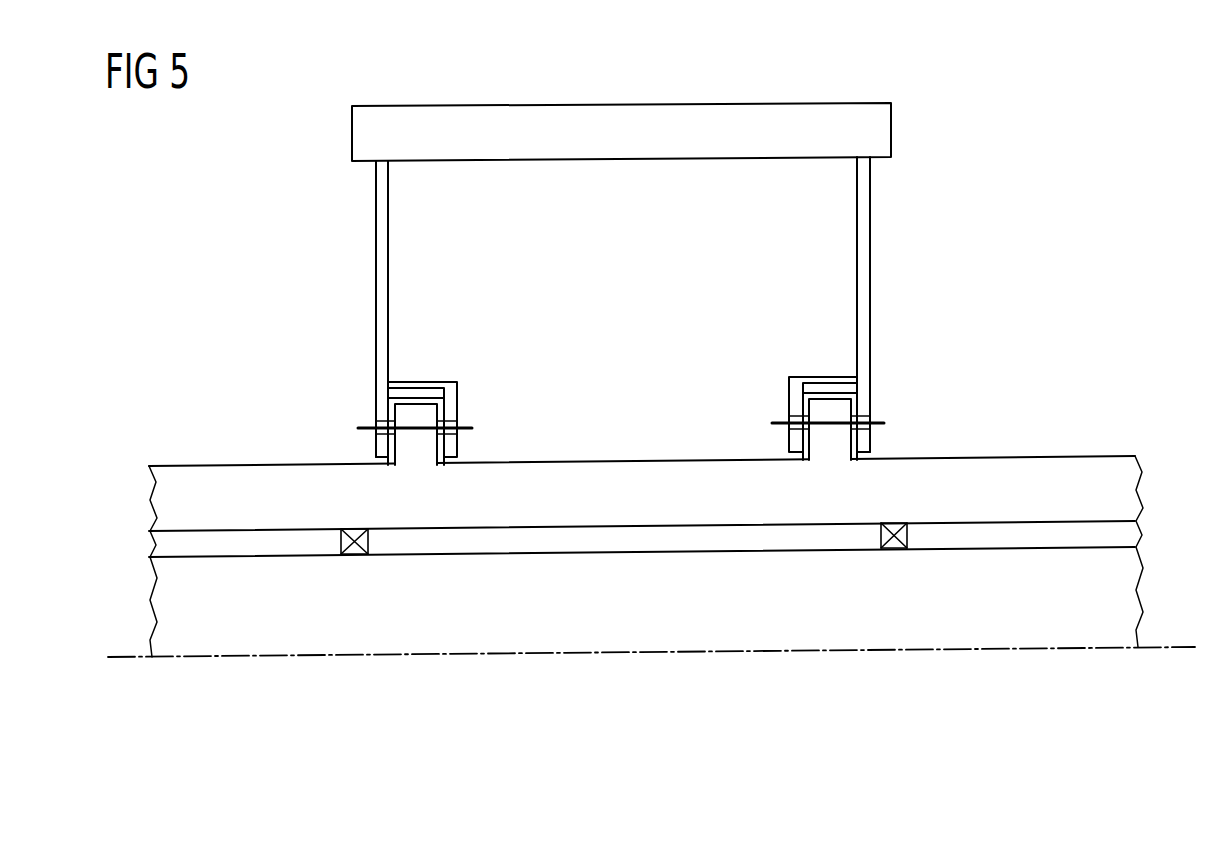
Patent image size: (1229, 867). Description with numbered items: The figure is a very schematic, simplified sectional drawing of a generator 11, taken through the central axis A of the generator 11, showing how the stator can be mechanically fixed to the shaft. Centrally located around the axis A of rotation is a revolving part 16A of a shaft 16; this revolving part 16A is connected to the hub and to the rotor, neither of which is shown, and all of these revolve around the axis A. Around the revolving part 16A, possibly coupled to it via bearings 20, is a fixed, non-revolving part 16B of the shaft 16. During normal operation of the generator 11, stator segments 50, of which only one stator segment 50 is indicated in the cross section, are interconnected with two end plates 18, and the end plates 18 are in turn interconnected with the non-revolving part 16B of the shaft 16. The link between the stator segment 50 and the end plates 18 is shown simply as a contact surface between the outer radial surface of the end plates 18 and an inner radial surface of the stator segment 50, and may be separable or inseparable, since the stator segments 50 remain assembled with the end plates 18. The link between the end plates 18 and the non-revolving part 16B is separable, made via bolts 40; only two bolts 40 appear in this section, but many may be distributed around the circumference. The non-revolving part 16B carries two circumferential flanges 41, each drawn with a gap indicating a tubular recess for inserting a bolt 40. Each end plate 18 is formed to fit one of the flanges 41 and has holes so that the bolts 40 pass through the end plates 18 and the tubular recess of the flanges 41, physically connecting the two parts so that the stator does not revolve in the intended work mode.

The generator 11 is at (1040, 113).
The stator segment 50 is at (590, 115).
The end plate 18 is at (383, 283).
The bolt 40 is at (365, 425).
The circumferential flange 41 is at (420, 410).
The shaft 16 is at (1128, 505).
The non-revolving part of the shaft 16B is at (1130, 479).
The revolving part of the shaft 16A is at (1128, 630).
The bearing 20 is at (352, 556).
The axis A is at (1175, 648).